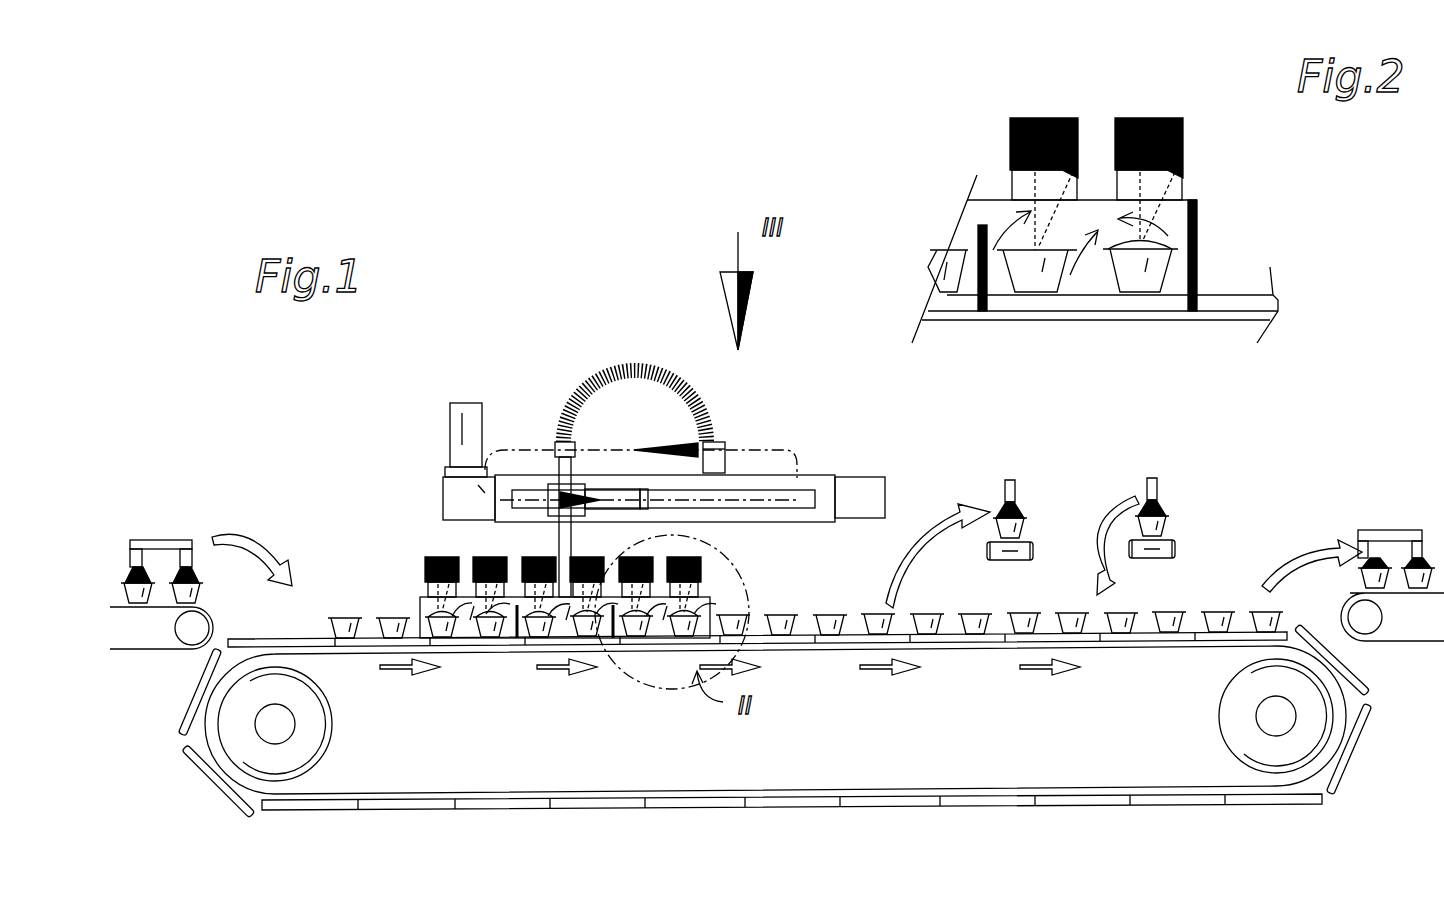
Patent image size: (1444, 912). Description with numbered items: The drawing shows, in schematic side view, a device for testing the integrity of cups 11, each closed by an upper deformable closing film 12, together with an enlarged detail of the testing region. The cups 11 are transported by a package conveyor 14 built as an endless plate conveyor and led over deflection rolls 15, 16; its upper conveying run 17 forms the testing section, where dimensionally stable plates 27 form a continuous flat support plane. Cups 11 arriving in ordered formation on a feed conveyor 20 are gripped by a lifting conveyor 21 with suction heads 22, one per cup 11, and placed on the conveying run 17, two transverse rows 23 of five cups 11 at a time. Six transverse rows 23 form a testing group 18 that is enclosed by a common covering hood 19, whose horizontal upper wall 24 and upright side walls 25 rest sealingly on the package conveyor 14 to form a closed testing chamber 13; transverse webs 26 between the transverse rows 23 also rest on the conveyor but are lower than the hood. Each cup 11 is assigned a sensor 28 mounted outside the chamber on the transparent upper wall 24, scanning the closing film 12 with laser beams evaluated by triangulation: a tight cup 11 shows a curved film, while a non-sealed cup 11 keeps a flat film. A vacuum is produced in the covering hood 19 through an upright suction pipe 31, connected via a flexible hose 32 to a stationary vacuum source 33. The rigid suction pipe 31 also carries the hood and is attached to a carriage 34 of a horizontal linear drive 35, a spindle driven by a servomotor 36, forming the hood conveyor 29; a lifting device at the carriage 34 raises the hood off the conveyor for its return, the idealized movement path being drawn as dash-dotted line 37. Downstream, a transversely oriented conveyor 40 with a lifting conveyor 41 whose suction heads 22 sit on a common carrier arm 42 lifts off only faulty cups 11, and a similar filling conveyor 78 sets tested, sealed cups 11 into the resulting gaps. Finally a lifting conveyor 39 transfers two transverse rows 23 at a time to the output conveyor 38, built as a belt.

In FIG. 1, the cup 11 is at (128, 590).
In FIG. 2, the cup 11 is at (1030, 280).
In FIG. 2, the closing film 12 is at (1057, 250).
In FIG. 1, the testing chamber 13 is at (590, 642).
In FIG. 2, the testing chamber 13 is at (1177, 283).
In FIG. 1, the package conveyor 14 is at (895, 555).
In FIG. 1, the deflection roll 15 is at (298, 760).
In FIG. 1, the deflection roll 16 is at (1258, 762).
In FIG. 1, the conveying run 17 is at (980, 670).
In FIG. 2, the conveying run 17 is at (1306, 324).
In FIG. 1, the testing group 18 is at (353, 487).
In FIG. 2, the testing group 18 is at (1010, 208).
In FIG. 1, the covering hood 19 is at (400, 589).
In FIG. 2, the covering hood 19 is at (1214, 180).
In FIG. 1, the feed conveyor 20 is at (169, 509).
In FIG. 1, the lifting conveyor 21 is at (210, 518).
In FIG. 1, the suction head 22 is at (172, 590).
In FIG. 1, the transverse row 23 is at (315, 613).
In FIG. 2, the transverse row 23 is at (1123, 282).
In FIG. 1, the upper wall 24 is at (655, 598).
In FIG. 2, the upper wall 24 is at (982, 200).
In FIG. 1, the side wall 25 is at (445, 630).
In FIG. 2, the side wall 25 is at (1193, 240).
In FIG. 1, the transverse web 26 is at (642, 612).
In FIG. 2, the transverse web 26 is at (978, 237).
In FIG. 1, the plate 27 is at (218, 782).
In FIG. 1, the sensor 28 is at (440, 558).
In FIG. 2, the sensor 28 is at (1035, 118).
In FIG. 1, the hood conveyor 29 is at (696, 350).
In FIG. 1, the suction pipe 31 is at (560, 460).
In FIG. 1, the hose 32 is at (623, 366).
In FIG. 1, the vacuum source 33 is at (722, 462).
In FIG. 1, the carriage 34 is at (620, 475).
In FIG. 1, the linear drive 35 is at (810, 450).
In FIG. 1, the servomotor 36 is at (462, 408).
In FIG. 1, the line 37 is at (655, 450).
In FIG. 1, the output conveyor 38 is at (1418, 552).
In FIG. 1, the lifting conveyor 39 is at (1378, 512).
In FIG. 1, the conveyor 40 is at (1064, 516).
In FIG. 1, the lifting conveyor 41 is at (1036, 495).
In FIG. 1, the carrier arm 42 is at (1010, 478).
In FIG. 1, the filling conveyor 78 is at (1213, 519).